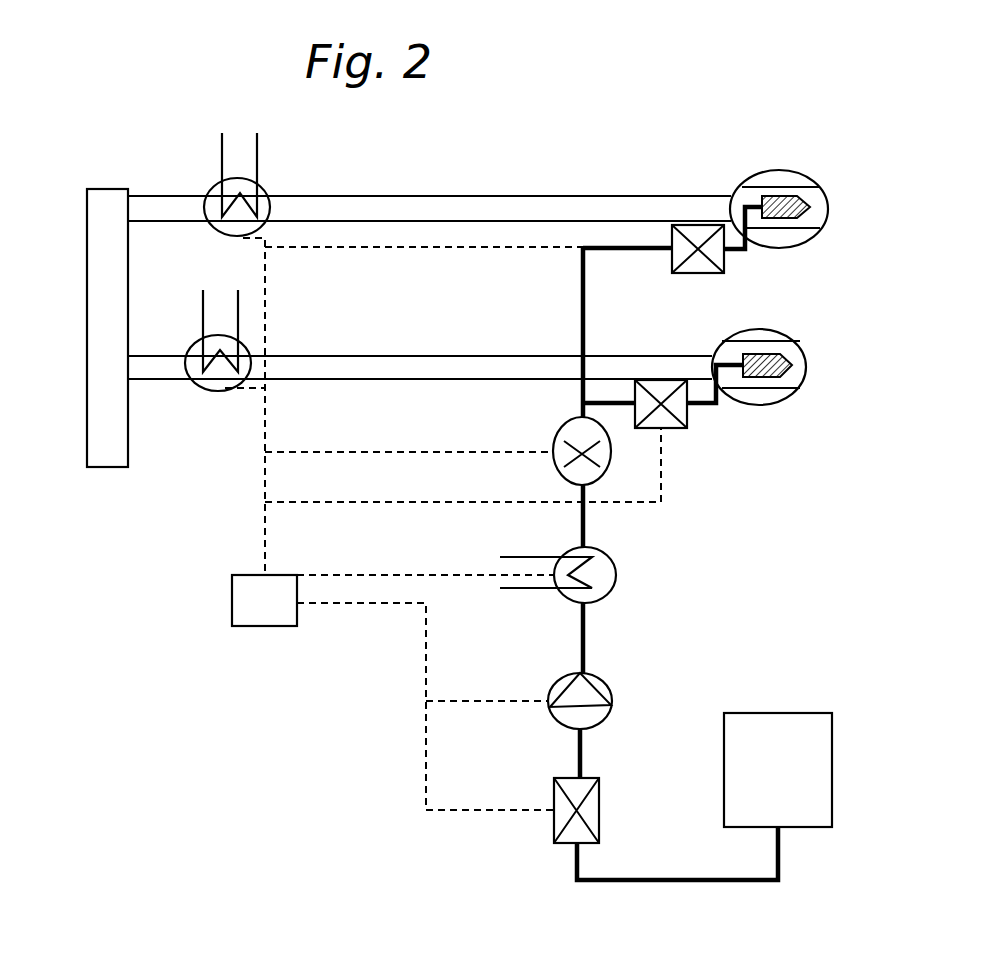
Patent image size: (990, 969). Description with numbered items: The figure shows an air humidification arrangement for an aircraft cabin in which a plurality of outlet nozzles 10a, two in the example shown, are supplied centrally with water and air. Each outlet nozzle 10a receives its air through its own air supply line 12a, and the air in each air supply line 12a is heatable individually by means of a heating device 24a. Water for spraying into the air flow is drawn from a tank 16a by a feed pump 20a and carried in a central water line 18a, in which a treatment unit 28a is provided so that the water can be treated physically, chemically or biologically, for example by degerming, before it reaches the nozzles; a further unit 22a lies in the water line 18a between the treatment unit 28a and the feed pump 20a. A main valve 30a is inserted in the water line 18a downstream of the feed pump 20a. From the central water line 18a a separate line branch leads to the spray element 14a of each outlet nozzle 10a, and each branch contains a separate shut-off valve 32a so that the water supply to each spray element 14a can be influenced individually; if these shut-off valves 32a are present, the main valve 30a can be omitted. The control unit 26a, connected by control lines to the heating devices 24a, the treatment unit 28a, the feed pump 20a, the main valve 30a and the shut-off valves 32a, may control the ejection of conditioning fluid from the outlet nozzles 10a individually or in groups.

The outlet nozzle 10a is at (776, 181).
The air supply line 12a is at (445, 197).
The spray element 14a is at (806, 202).
The fuel tank 16a is at (825, 770).
The central water line 18a is at (583, 530).
The feed pump 20a is at (600, 705).
The heat exchanger 22a is at (600, 575).
The heating device 24a is at (237, 236).
The control unit 26a is at (258, 630).
The treatment unit 28a is at (612, 455).
The main valve 30a is at (553, 830).
The shut-off valve 32a is at (700, 245).